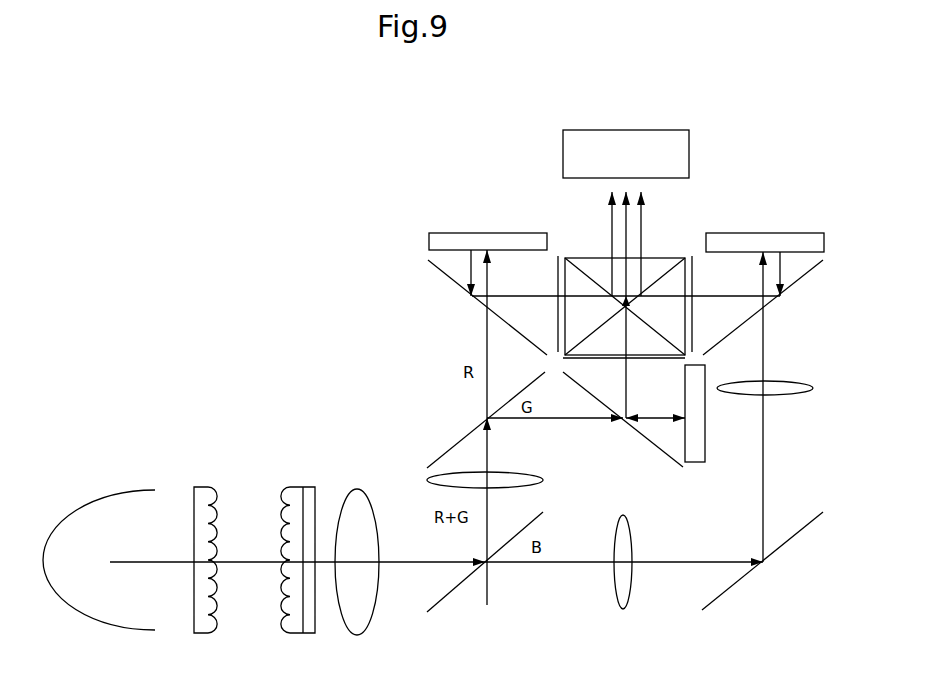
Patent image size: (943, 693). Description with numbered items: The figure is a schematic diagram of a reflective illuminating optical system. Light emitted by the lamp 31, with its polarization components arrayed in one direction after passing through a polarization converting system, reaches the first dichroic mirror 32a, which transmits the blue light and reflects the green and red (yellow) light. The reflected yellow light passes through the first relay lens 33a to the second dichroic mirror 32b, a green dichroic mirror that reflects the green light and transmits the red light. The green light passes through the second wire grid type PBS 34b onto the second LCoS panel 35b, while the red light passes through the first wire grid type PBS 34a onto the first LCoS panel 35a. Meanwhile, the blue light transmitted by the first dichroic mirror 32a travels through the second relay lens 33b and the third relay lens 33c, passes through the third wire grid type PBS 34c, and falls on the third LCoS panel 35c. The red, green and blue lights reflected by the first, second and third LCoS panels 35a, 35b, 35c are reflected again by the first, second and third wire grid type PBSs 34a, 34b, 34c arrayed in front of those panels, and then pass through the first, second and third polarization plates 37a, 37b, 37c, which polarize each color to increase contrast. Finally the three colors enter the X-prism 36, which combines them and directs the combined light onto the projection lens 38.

The lamp 31 is at (110, 500).
The first dichroic mirror 32a is at (447, 606).
The second dichroic mirror 32b is at (452, 449).
The first relay lens 33a is at (527, 478).
The second relay lens 33b is at (615, 585).
The third relay lens 33c is at (790, 395).
The first wire grid type PBS 34a is at (455, 282).
The second wire grid type PBS 34b is at (640, 433).
The third wire grid type PBS 34c is at (797, 281).
The first LCoS panel 35a is at (462, 243).
The second LCoS panel 35b is at (703, 445).
The third LCoS panel 35c is at (787, 243).
The X-prism 36 is at (685, 315).
The first polarization plate 37a is at (558, 262).
The second polarization plate 37b is at (650, 360).
The third polarization plate 37c is at (692, 262).
The projection lens 38 is at (677, 157).